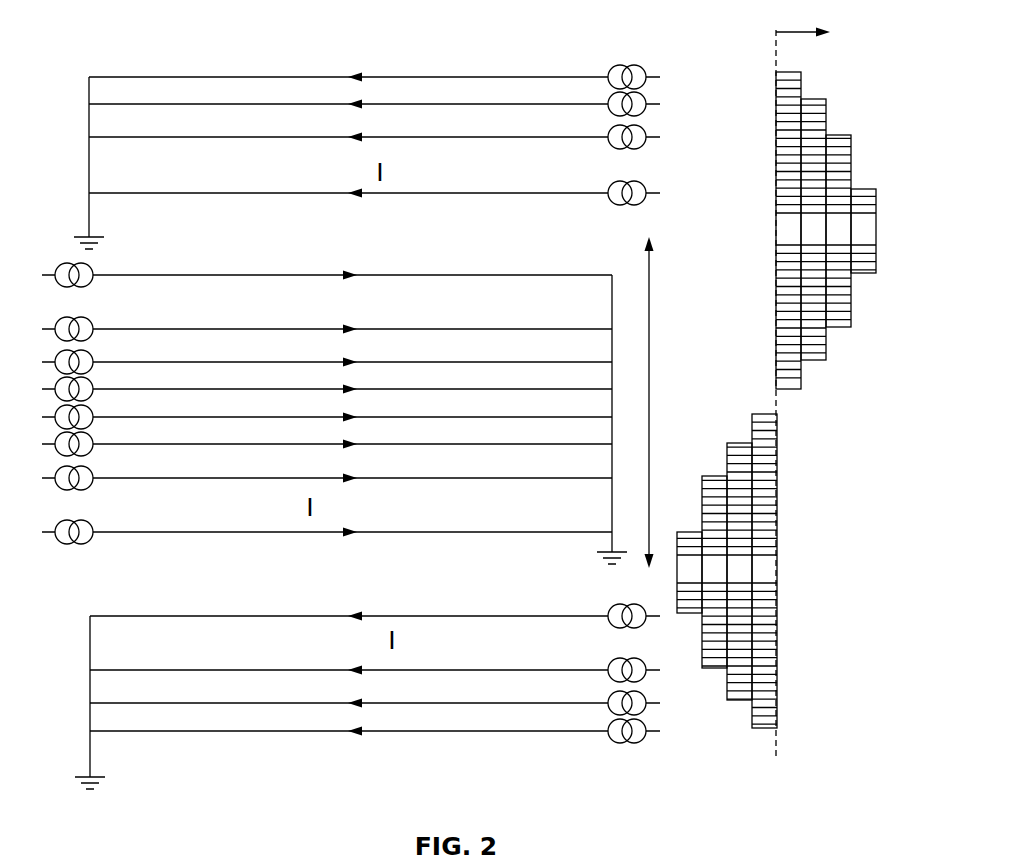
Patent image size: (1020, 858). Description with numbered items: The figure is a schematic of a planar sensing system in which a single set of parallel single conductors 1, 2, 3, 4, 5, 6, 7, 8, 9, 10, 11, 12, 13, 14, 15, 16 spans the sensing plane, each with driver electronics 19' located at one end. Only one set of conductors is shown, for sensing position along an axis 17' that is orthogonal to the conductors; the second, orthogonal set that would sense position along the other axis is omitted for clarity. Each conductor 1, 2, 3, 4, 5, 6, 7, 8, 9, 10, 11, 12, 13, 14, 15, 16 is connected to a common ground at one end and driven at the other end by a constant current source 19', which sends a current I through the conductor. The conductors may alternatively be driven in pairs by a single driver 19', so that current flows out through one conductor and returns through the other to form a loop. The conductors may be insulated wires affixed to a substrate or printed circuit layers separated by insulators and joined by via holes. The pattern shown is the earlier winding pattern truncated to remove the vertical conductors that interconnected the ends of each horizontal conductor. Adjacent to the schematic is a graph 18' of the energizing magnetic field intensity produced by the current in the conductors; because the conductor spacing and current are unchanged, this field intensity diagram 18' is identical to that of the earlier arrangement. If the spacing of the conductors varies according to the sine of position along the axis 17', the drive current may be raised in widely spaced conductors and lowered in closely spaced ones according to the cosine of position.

The parallel single conductor 1 is at (348, 63).
The parallel single conductor 2 is at (348, 93).
The parallel single conductor 3 is at (348, 123).
The parallel single conductor 4 is at (348, 181).
The parallel single conductor 5 is at (352, 263).
The parallel single conductor 6 is at (352, 318).
The parallel single conductor 7 is at (352, 350).
The parallel single conductor 8 is at (352, 378).
The parallel single conductor 9 is at (352, 405).
The parallel single conductor 10 is at (352, 433).
The parallel single conductor 11 is at (352, 466).
The parallel single conductor 12 is at (352, 520).
The parallel single conductor 13 is at (349, 604).
The parallel single conductor 14 is at (349, 658).
The parallel single conductor 15 is at (349, 691).
The parallel single conductor 16 is at (349, 719).
The axis 17' is at (648, 385).
The field intensity diagram 18' is at (776, 385).
The constant current source 19' is at (360, 403).